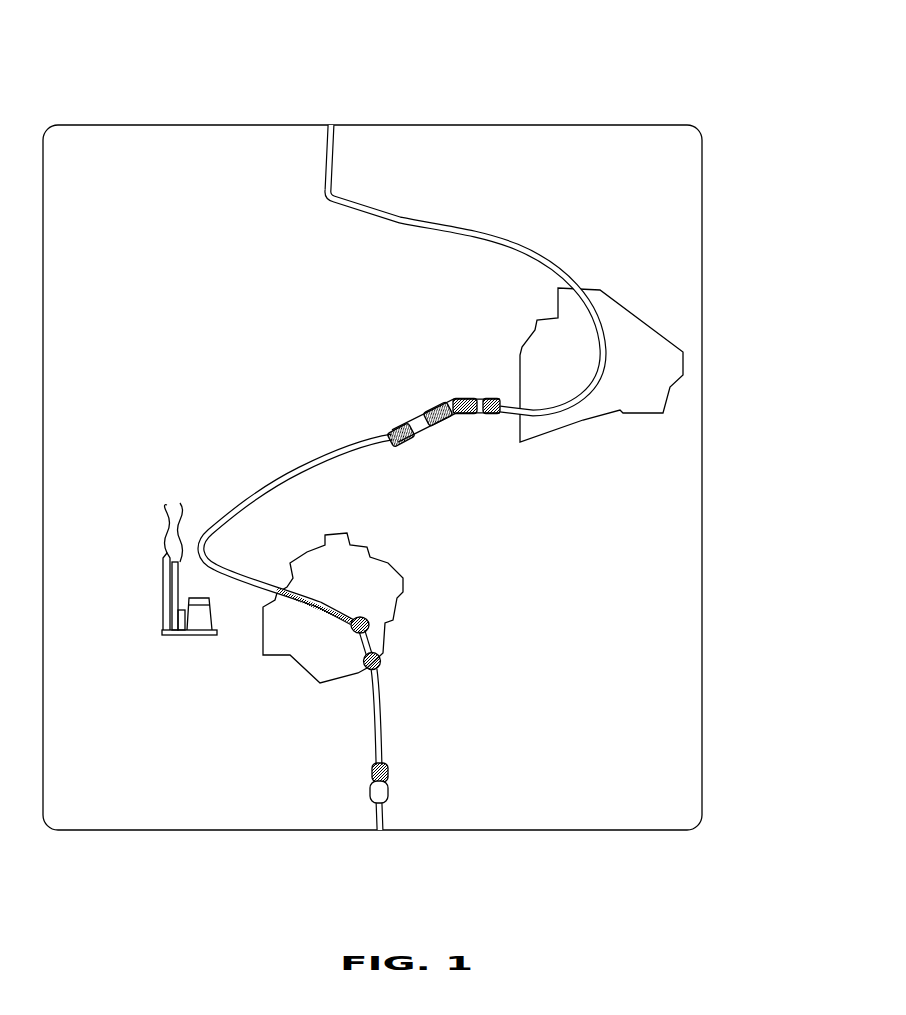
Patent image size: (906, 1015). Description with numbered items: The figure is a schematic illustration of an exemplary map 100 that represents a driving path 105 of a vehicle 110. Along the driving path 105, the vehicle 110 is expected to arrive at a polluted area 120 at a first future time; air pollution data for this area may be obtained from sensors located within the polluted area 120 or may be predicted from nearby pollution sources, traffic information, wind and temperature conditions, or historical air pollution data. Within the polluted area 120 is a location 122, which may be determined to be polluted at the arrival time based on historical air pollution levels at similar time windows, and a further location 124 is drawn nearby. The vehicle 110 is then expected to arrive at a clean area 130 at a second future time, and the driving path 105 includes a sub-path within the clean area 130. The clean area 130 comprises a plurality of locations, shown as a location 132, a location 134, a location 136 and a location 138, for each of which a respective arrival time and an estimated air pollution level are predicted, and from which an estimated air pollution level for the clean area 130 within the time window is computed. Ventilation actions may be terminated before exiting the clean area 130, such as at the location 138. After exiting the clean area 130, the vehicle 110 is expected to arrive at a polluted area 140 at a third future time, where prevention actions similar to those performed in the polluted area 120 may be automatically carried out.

The map 100 is at (130, 98).
The driving path 105 is at (484, 212).
The vehicle 110 is at (390, 791).
The polluted area 120 is at (301, 675).
The location 122 is at (380, 661).
The connector 124 is at (367, 626).
The clean area 130 is at (441, 390).
The location 132 is at (404, 444).
The location 134 is at (427, 400).
The location 136 is at (466, 414).
The location 138 is at (493, 397).
The polluted area 140 is at (665, 303).